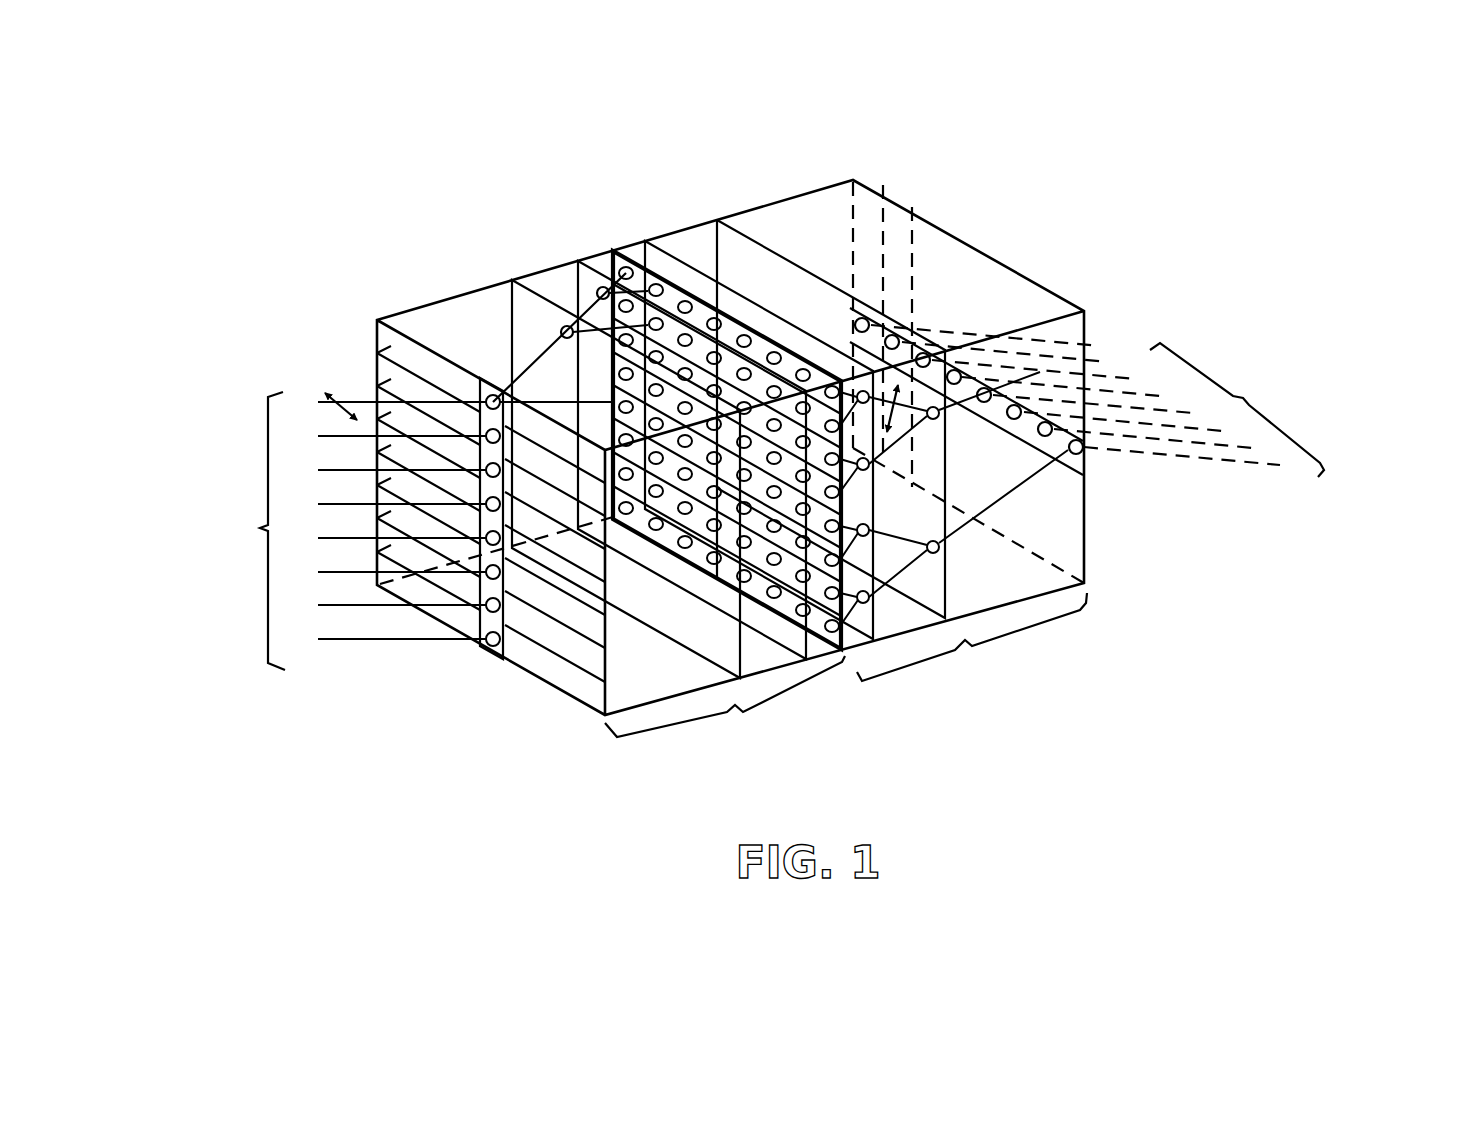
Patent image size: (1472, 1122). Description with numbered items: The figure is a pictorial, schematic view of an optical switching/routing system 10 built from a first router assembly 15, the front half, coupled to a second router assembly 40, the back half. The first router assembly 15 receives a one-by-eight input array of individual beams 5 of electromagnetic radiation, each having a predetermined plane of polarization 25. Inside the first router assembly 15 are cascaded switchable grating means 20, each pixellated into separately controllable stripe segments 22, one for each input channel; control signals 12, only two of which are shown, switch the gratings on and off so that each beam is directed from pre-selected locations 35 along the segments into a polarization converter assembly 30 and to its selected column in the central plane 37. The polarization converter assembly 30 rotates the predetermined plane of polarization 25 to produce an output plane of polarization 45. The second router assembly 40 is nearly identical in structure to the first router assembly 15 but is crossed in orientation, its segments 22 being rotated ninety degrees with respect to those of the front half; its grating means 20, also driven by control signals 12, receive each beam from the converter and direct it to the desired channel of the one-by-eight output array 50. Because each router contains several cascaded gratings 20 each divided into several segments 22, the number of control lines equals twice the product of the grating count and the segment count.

The individual beams 5 is at (267, 447).
The optical switching/routing system 10 is at (430, 212).
The control signals 12 is at (377, 355).
The first router assembly 15 is at (662, 528).
The grating means 20 is at (835, 176).
The stripe segments 22 is at (892, 220).
The predetermined plane of polarization 25 is at (338, 393).
The polarization converter assembly 30 is at (858, 682).
The pre-selected locations 35 is at (493, 393).
The central plane 37 is at (698, 602).
The second router assembly 40 is at (980, 546).
The output plane of polarization 45 is at (1000, 485).
The output array 50 is at (1155, 392).